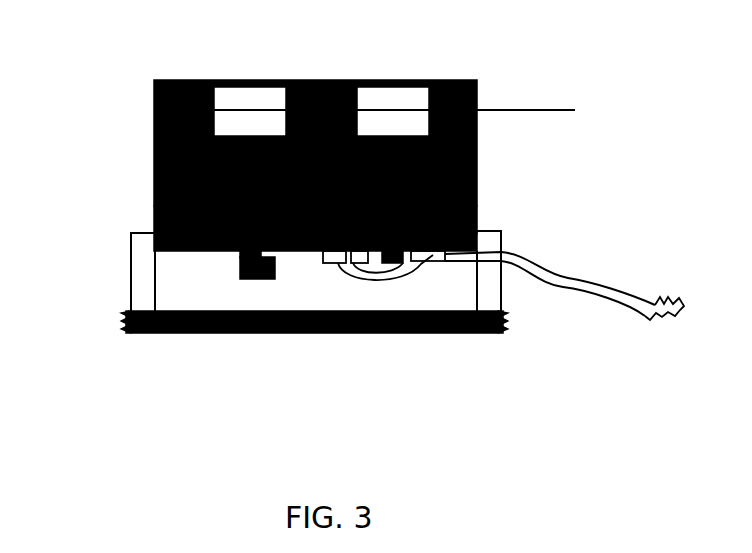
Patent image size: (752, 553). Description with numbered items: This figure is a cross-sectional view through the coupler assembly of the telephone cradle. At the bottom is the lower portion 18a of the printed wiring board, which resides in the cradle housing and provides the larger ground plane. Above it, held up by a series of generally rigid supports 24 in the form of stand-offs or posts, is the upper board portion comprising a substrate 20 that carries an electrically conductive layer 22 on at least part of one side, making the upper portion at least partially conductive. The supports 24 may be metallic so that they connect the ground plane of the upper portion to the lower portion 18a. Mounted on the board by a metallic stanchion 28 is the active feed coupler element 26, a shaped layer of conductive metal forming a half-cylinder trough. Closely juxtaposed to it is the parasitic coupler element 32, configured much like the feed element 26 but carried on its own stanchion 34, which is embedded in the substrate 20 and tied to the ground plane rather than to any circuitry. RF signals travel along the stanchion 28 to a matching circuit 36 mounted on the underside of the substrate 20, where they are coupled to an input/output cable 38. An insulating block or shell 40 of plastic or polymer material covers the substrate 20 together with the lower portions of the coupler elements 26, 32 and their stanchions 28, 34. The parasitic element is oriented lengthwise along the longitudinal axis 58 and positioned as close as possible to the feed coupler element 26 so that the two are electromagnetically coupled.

The lower portion 18a is at (337, 312).
The substrate 20 is at (160, 215).
The electrically conductive layer 22 is at (197, 186).
The supports 24 is at (133, 264).
The active feed coupler element 26 is at (405, 92).
The stanchion 28 is at (469, 150).
The parasitic coupler element 32 is at (261, 92).
The stanchion 34 is at (213, 152).
The matching circuit 36 is at (320, 263).
The input/output cable 38 is at (567, 270).
The insulating material 40 is at (146, 107).
The longitudinal axis 58 is at (396, 112).